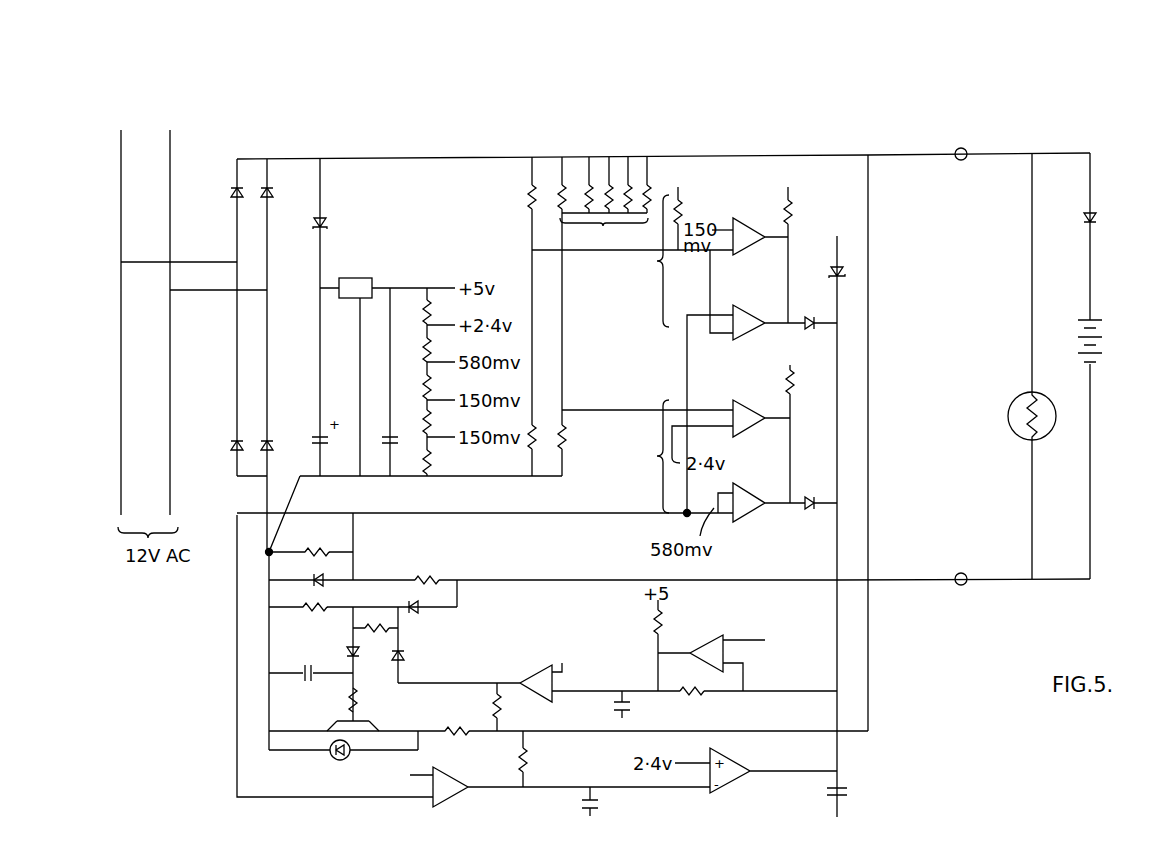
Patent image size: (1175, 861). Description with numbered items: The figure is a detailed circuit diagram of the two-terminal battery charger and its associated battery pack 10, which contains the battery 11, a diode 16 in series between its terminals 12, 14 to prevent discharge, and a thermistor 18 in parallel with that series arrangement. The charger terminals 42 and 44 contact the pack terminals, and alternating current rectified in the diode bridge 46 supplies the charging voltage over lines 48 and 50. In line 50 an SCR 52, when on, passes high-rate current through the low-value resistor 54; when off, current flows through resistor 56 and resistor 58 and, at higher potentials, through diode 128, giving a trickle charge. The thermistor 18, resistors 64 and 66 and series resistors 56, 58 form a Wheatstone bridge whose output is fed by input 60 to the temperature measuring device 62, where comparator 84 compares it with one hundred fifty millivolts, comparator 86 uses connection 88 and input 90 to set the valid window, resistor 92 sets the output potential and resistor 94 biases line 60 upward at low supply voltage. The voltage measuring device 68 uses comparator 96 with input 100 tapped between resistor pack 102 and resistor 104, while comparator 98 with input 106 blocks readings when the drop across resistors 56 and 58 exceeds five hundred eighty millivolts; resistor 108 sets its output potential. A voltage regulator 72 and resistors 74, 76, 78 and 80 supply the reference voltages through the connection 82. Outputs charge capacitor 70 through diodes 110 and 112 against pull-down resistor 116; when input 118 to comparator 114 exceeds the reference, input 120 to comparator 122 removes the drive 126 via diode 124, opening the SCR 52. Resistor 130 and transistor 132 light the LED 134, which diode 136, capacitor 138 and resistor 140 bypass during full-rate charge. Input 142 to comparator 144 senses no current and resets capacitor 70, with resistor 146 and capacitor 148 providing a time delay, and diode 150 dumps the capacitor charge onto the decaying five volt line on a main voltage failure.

The battery pack 10 is at (1122, 320).
The battery 11 is at (1101, 360).
The terminal 12 is at (967, 160).
The terminal 14 is at (964, 573).
The diode 16 is at (1097, 218).
The thermistor 18 is at (1008, 416).
The terminal 42 is at (957, 587).
The terminal 44 is at (955, 158).
The diode bridge 46 is at (244, 376).
The line 48 is at (430, 158).
The line 50 is at (520, 580).
The SCR 52 is at (422, 615).
The resistor 54 is at (306, 612).
The resistor 56 is at (424, 578).
The resistor 58 is at (320, 550).
The input 60 is at (577, 250).
The temperature measuring device 62 is at (653, 261).
The resistor 64 is at (527, 192).
The resistor 66 is at (529, 448).
The voltage measuring device 68 is at (650, 456).
The capacitor 70 is at (844, 788).
The voltage regulator 72 is at (376, 278).
The resistor 74 is at (431, 308).
The resistor 76 is at (431, 348).
The resistor 78 is at (427, 385).
The resistor 80 is at (430, 455).
The connection 82 is at (269, 553).
The comparator 84 is at (746, 220).
The comparator 86 is at (749, 306).
The connection 88 is at (712, 306).
The input 90 is at (686, 358).
The resistor 92 is at (792, 206).
The resistor 94 is at (682, 209).
The comparator 96 is at (749, 400).
The comparator 98 is at (750, 485).
The input 100 is at (581, 410).
The resistor pack 102 is at (604, 202).
The resistor 104 is at (567, 446).
The input 106 is at (560, 513).
The resistor 108 is at (793, 386).
The diode 110 is at (810, 316).
The diode 112 is at (806, 496).
The comparator 114 is at (715, 637).
The pull-down resistor 116 is at (703, 698).
The input 118 is at (796, 691).
The input 120 is at (602, 691).
The comparator 122 is at (535, 668).
The diode 124 is at (392, 652).
The drive 126 is at (402, 615).
The diode 128 is at (314, 580).
The resistor 130 is at (458, 734).
The transistor 132 is at (366, 718).
The LED 134 is at (332, 762).
The diode 136 is at (348, 653).
The capacitor 138 is at (303, 683).
The resistor 140 is at (348, 694).
The input 142 is at (237, 798).
The comparator 144 is at (466, 793).
The resistor 146 is at (528, 764).
The capacitor 148 is at (598, 798).
The diode 150 is at (831, 270).